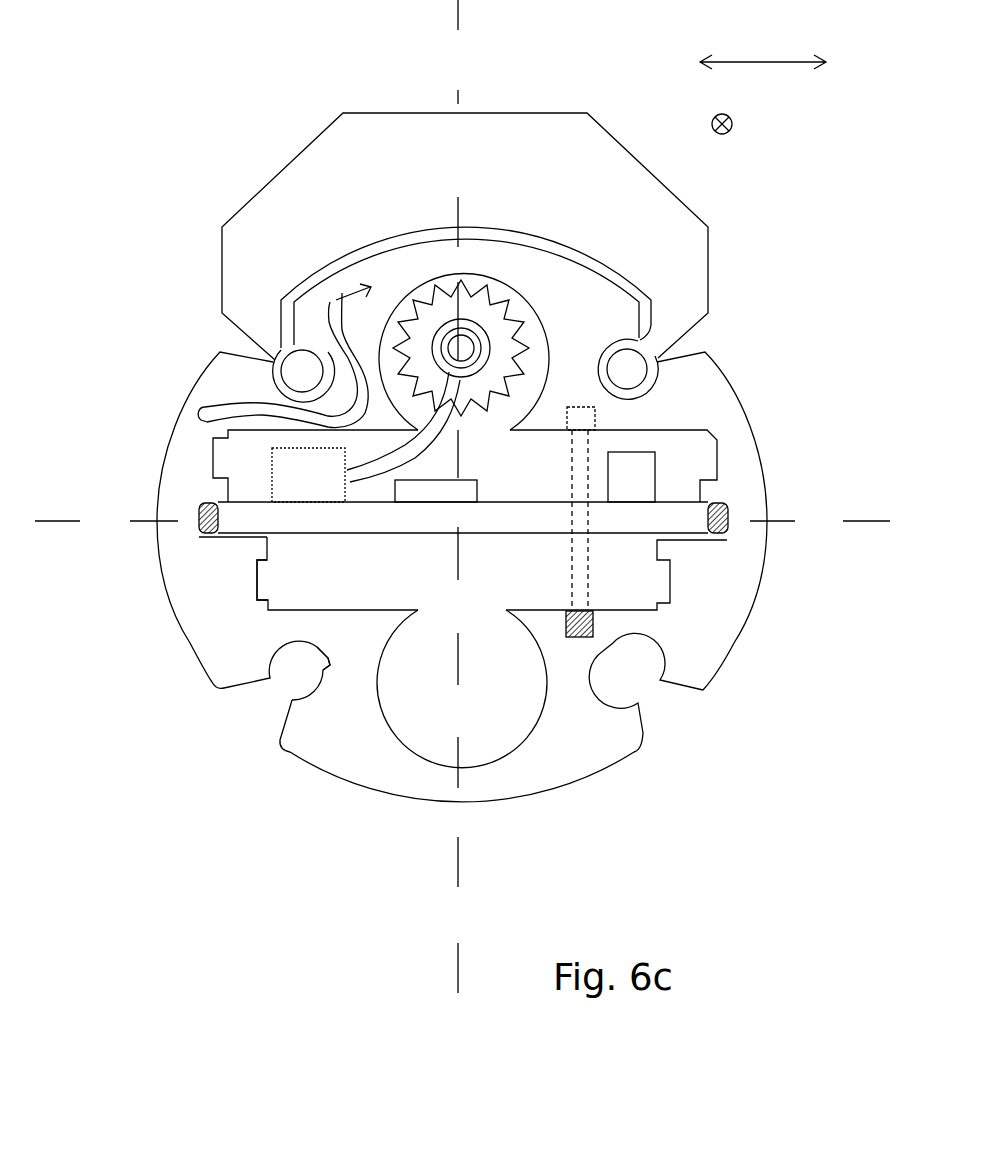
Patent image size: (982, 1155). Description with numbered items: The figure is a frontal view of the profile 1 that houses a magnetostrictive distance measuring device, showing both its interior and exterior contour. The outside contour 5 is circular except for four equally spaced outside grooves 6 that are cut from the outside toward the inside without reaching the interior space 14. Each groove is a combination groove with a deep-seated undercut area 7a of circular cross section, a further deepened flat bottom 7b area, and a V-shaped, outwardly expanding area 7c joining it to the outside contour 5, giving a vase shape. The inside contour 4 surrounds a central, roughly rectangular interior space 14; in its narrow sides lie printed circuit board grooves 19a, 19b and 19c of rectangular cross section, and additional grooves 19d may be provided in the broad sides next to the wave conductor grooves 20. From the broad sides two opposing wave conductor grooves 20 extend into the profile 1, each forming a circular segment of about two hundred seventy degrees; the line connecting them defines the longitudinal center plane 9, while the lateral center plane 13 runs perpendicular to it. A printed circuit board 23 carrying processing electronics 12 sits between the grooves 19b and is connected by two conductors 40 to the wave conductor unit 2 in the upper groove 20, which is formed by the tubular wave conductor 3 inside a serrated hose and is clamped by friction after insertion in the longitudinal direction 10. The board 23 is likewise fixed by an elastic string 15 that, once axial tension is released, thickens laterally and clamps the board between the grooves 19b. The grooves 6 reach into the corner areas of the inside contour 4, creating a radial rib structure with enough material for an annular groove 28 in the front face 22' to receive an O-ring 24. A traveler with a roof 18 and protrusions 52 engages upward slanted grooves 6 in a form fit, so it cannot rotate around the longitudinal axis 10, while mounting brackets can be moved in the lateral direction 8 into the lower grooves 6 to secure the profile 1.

The profile 1 is at (462, 761).
The wave conductor unit 2 is at (523, 320).
The wave conductor 3 is at (469, 336).
The inside contour 4 is at (327, 609).
The outside contour 5 is at (737, 643).
The outside grooves 6 is at (653, 387).
The undercut area 7a is at (271, 670).
The flat bottom area 7b is at (331, 659).
The V-shaped expanding area 7c is at (266, 723).
The lateral direction 8 is at (752, 62).
The longitudinal center plane 9 is at (457, 881).
The longitudinal direction 10 is at (733, 124).
The processing electronics 12 is at (610, 468).
The lateral center plane 13 is at (873, 521).
The interior space 14 is at (586, 561).
The string 15 is at (205, 536).
The roof 18 is at (465, 236).
The printed circuit board groove 19a is at (214, 470).
The printed circuit board groove 19b is at (200, 505).
The printed circuit board groove 19c is at (257, 594).
The printed circuit board groove 19d is at (582, 637).
The wave conductor groove 20 is at (552, 331).
The front face 22' is at (242, 387).
The printed circuit board 23 is at (571, 543).
The O-ring 24 is at (343, 288).
The annular groove 28 is at (332, 353).
The conductor 40 is at (377, 470).
The protrusion 52 is at (465, 370).